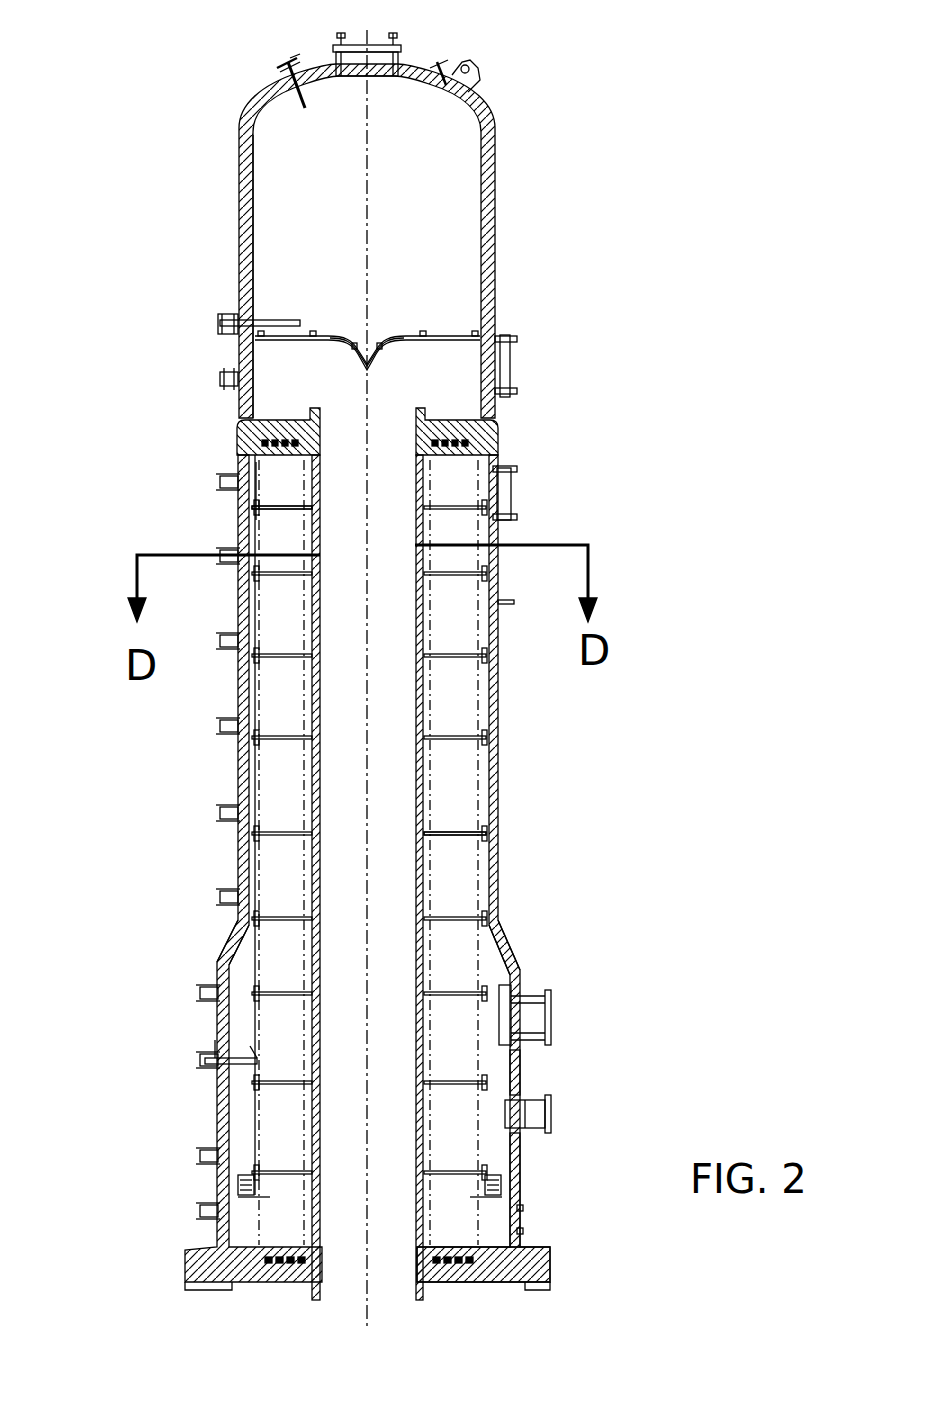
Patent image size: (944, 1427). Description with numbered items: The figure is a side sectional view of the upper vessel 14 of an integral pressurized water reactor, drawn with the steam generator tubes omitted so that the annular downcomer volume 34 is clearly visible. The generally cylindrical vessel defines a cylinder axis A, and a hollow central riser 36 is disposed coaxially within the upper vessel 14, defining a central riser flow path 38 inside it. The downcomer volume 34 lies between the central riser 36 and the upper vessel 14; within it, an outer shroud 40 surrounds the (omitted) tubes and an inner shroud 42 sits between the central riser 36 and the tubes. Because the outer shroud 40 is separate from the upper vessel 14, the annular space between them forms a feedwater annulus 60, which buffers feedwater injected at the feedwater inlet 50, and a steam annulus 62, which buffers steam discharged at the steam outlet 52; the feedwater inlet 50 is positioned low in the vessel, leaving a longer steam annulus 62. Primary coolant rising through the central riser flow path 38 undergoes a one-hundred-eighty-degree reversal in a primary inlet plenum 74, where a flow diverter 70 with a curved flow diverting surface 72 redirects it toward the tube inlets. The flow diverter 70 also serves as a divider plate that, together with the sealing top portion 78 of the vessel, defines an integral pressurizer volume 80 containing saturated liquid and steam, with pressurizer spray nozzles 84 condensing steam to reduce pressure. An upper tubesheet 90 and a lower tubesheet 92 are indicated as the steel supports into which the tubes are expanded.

The upper vessel 14 is at (497, 772).
The downcomer volume 34 is at (457, 690).
The central riser 36 is at (430, 902).
The central riser flow path 38 is at (340, 912).
The outer shroud 40 is at (478, 824).
The inner shroud 42 is at (428, 838).
The feedwater inlet 50 is at (550, 1117).
The steam outlet 52 is at (548, 1012).
The feedwater annulus 60 is at (505, 1105).
The steam annulus 62 is at (232, 938).
The flow diverter 70 is at (318, 356).
The flow diverting surface 72 is at (407, 345).
The primary inlet plenum 74 is at (412, 388).
The sealing top portion 78 is at (246, 80).
The integral pressurizer volume 80 is at (296, 190).
The pressurizer spray nozzles 84 is at (286, 56).
The upper tubesheet 90 is at (290, 450).
The lower tubesheet 92 is at (480, 1238).
The cylinder axis A is at (368, 222).